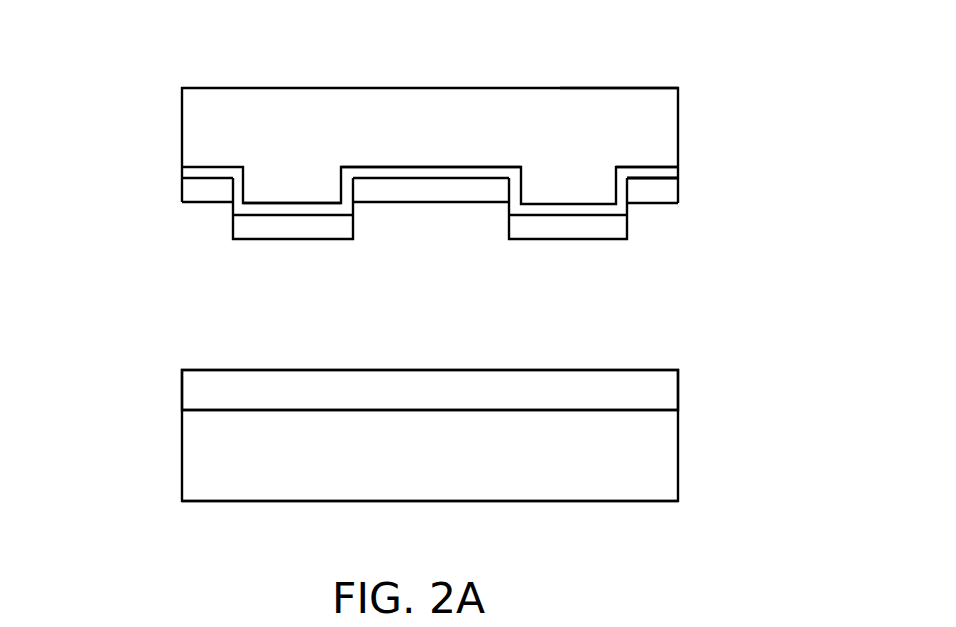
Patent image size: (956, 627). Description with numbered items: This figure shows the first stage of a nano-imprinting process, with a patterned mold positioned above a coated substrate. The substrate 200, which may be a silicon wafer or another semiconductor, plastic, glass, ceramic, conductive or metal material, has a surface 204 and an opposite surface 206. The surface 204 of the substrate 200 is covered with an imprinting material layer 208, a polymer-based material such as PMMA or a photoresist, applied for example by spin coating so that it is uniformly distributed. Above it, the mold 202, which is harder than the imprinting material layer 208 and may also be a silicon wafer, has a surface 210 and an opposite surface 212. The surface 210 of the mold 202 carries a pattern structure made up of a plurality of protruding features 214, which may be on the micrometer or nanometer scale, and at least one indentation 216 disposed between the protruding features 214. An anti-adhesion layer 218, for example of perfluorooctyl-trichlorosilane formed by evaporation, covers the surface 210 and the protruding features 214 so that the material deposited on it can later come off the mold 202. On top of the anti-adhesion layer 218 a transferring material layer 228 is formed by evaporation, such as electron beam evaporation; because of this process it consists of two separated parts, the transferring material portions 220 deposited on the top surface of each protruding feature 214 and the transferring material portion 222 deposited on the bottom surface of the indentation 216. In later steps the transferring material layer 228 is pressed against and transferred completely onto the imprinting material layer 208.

The substrate 200 is at (662, 456).
The mold 202 is at (662, 125).
The surface 204 is at (198, 413).
The surface 206 is at (198, 506).
The imprinting material layer 208 is at (662, 386).
The surface 210 is at (431, 156).
The surface 212 is at (607, 80).
The protruding features 214 is at (293, 193).
The indentation 216 is at (653, 186).
The anti-adhesion layer 218 is at (662, 170).
The transferring material portions 220 is at (247, 224).
The transferring material portion 222 is at (190, 191).
The transferring material layer 228 is at (345, 215).